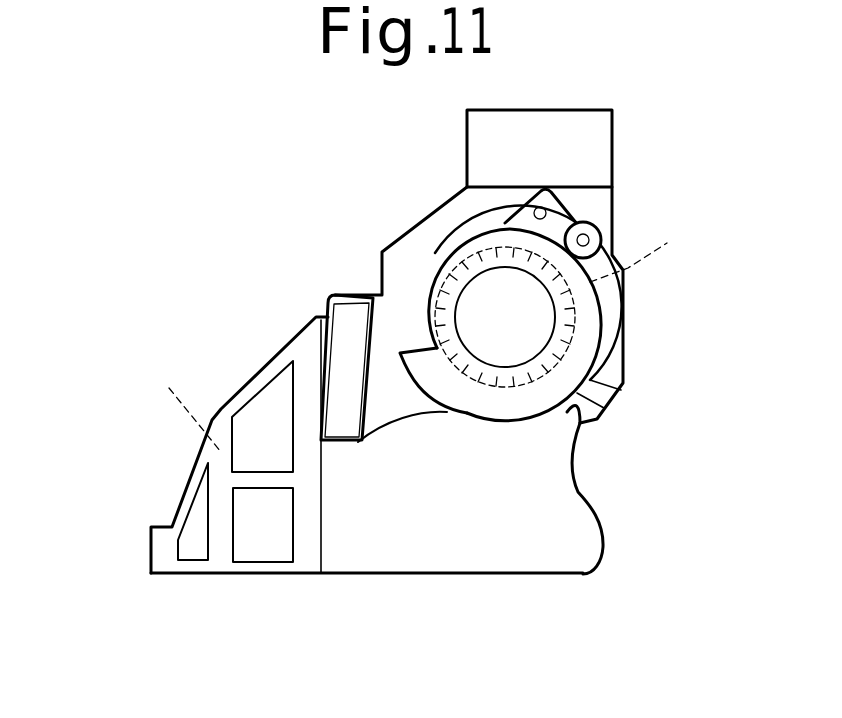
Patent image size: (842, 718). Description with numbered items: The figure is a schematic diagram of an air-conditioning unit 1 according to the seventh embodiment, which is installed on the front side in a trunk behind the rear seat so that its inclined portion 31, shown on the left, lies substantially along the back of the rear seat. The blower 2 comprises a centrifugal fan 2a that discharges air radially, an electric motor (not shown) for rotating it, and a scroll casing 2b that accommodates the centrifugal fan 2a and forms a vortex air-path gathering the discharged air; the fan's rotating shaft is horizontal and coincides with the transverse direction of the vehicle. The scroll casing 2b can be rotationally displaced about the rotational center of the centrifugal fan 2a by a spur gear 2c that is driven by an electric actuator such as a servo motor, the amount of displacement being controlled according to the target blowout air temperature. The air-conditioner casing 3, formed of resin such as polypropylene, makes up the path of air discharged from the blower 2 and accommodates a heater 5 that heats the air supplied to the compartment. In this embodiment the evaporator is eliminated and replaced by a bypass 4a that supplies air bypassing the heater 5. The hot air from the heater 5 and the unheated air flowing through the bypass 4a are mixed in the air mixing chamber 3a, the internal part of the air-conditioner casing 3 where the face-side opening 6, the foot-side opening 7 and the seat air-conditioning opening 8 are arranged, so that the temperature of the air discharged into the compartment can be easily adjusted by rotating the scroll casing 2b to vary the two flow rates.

The air-conditioning unit 1 is at (623, 128).
The blower 2 is at (622, 322).
The centrifugal fan 2a is at (647, 256).
The scroll casing 2b is at (617, 380).
The spur gear 2c is at (584, 219).
The air-conditioner casing 3 is at (583, 466).
The air mixing chamber 3a is at (185, 407).
The bypass 4a is at (530, 507).
The heater 5 is at (350, 333).
The face-side opening 6 is at (262, 533).
The foot-side opening 7 is at (258, 420).
The seat air-conditioning opening 8 is at (193, 522).
The inclined portion of the air-conditioning unit 31 is at (190, 498).